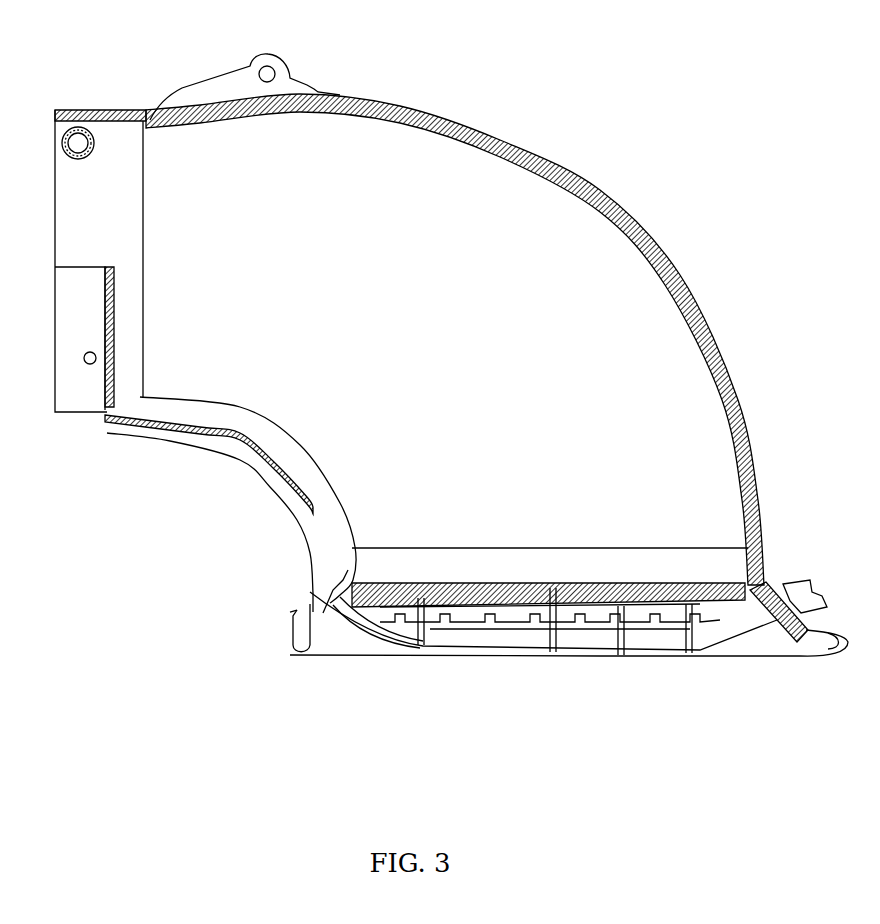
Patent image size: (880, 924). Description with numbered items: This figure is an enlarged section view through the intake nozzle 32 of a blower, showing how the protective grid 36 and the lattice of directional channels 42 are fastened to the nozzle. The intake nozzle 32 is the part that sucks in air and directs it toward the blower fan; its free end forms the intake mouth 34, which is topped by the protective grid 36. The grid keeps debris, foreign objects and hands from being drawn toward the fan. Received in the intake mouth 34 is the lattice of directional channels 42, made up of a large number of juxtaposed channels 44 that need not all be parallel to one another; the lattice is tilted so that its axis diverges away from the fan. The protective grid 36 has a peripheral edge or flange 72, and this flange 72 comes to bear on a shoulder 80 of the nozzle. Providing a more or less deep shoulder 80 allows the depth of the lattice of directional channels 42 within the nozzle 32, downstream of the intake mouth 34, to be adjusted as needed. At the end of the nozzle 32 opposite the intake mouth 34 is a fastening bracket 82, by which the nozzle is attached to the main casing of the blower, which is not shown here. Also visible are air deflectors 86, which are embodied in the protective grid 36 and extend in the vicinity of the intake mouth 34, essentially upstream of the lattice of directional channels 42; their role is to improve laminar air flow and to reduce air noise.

The intake nozzle 32 is at (733, 400).
The intake mouth 34 is at (337, 650).
The protective grid 36 is at (740, 650).
The lattice of directional channels 42 is at (648, 648).
The channels 44 is at (652, 582).
The peripheral edge 72 is at (290, 647).
The shoulder 80 is at (318, 600).
The fastening bracket 82 is at (73, 220).
The air deflectors 86 is at (546, 648).